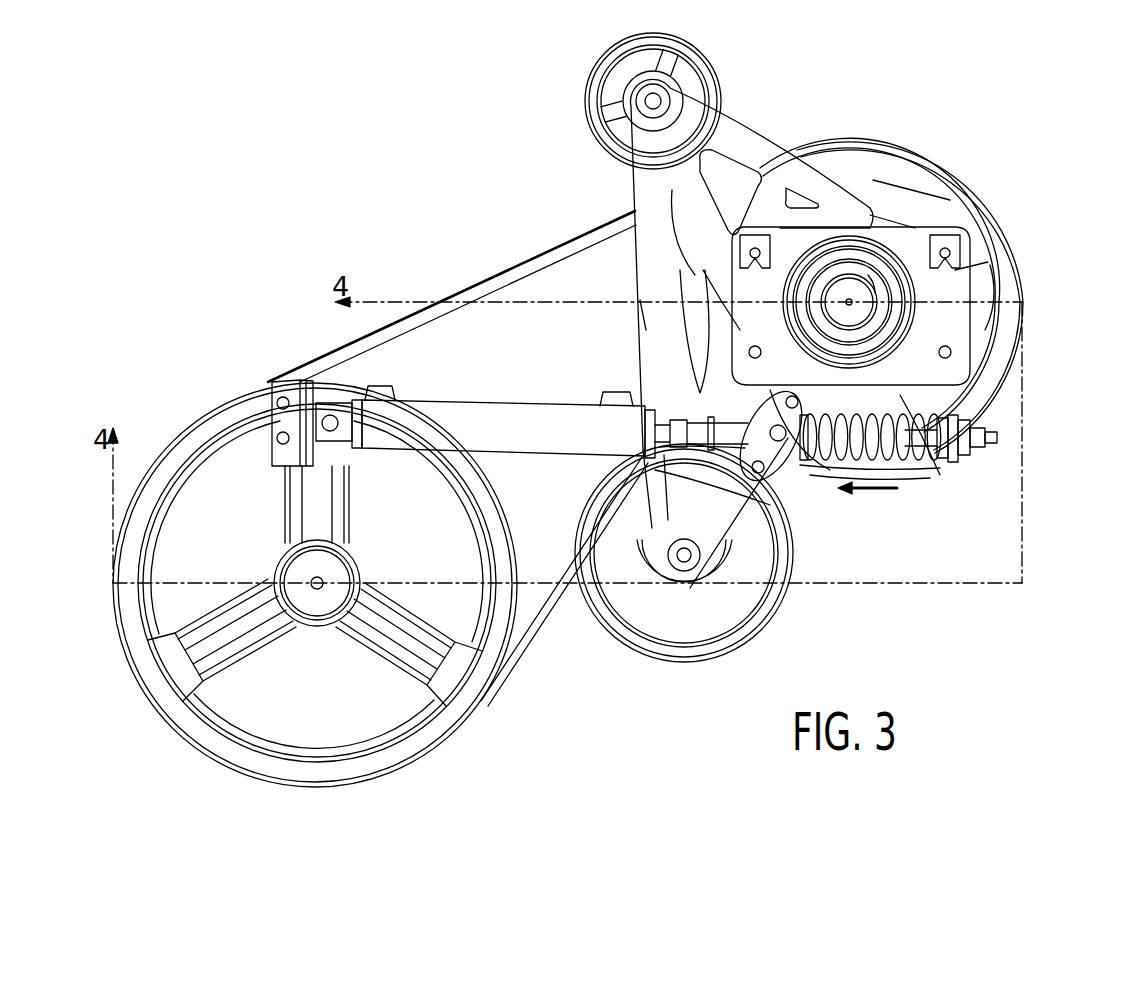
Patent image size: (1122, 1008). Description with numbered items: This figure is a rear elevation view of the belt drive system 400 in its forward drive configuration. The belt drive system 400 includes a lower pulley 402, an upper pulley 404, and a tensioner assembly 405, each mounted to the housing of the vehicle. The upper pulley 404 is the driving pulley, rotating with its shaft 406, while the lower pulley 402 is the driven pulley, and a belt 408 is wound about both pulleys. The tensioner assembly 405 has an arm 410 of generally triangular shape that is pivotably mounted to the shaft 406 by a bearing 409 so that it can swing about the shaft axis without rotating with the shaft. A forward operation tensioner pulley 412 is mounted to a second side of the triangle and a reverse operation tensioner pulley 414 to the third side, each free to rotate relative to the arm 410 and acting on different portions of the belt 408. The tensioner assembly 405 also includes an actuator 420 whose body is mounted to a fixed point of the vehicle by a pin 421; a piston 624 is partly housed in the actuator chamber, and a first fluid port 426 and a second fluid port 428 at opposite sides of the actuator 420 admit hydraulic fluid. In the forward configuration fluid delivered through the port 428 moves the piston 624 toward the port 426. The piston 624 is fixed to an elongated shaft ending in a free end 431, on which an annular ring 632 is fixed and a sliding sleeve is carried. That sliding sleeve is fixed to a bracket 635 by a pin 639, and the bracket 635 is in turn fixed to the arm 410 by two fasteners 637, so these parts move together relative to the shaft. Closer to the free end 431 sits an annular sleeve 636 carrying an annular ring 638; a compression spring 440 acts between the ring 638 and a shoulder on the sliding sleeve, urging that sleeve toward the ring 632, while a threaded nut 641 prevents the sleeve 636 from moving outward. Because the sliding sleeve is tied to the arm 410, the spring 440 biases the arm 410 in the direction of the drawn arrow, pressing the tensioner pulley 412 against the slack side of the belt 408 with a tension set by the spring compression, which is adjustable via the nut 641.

The belt drive system 400 is at (428, 248).
The lower pulley 402 is at (314, 602).
The upper pulley 404 is at (1000, 262).
The tensioner assembly 405 is at (656, 167).
The shaft 406 is at (880, 268).
The belt 408 is at (355, 348).
The bearing 409 is at (905, 320).
The arm 410 is at (655, 320).
The forward operation tensioner pulley 412 is at (722, 620).
The reverse operation tensioner pulley 414 is at (597, 128).
The actuator 420 is at (405, 442).
The pin 421 is at (330, 423).
The first fluid port 426 is at (380, 384).
The second fluid port 428 is at (622, 390).
The free end 431 is at (997, 442).
The compression spring 440 is at (910, 457).
The piston 624 is at (643, 474).
The annular ring 632 is at (700, 418).
The bracket 635 is at (800, 463).
The annular sleeve 636 is at (917, 447).
The fasteners 637 is at (758, 468).
The pin 639 is at (778, 450).
The annular ring 638 is at (957, 463).
The threaded nut 641 is at (977, 447).